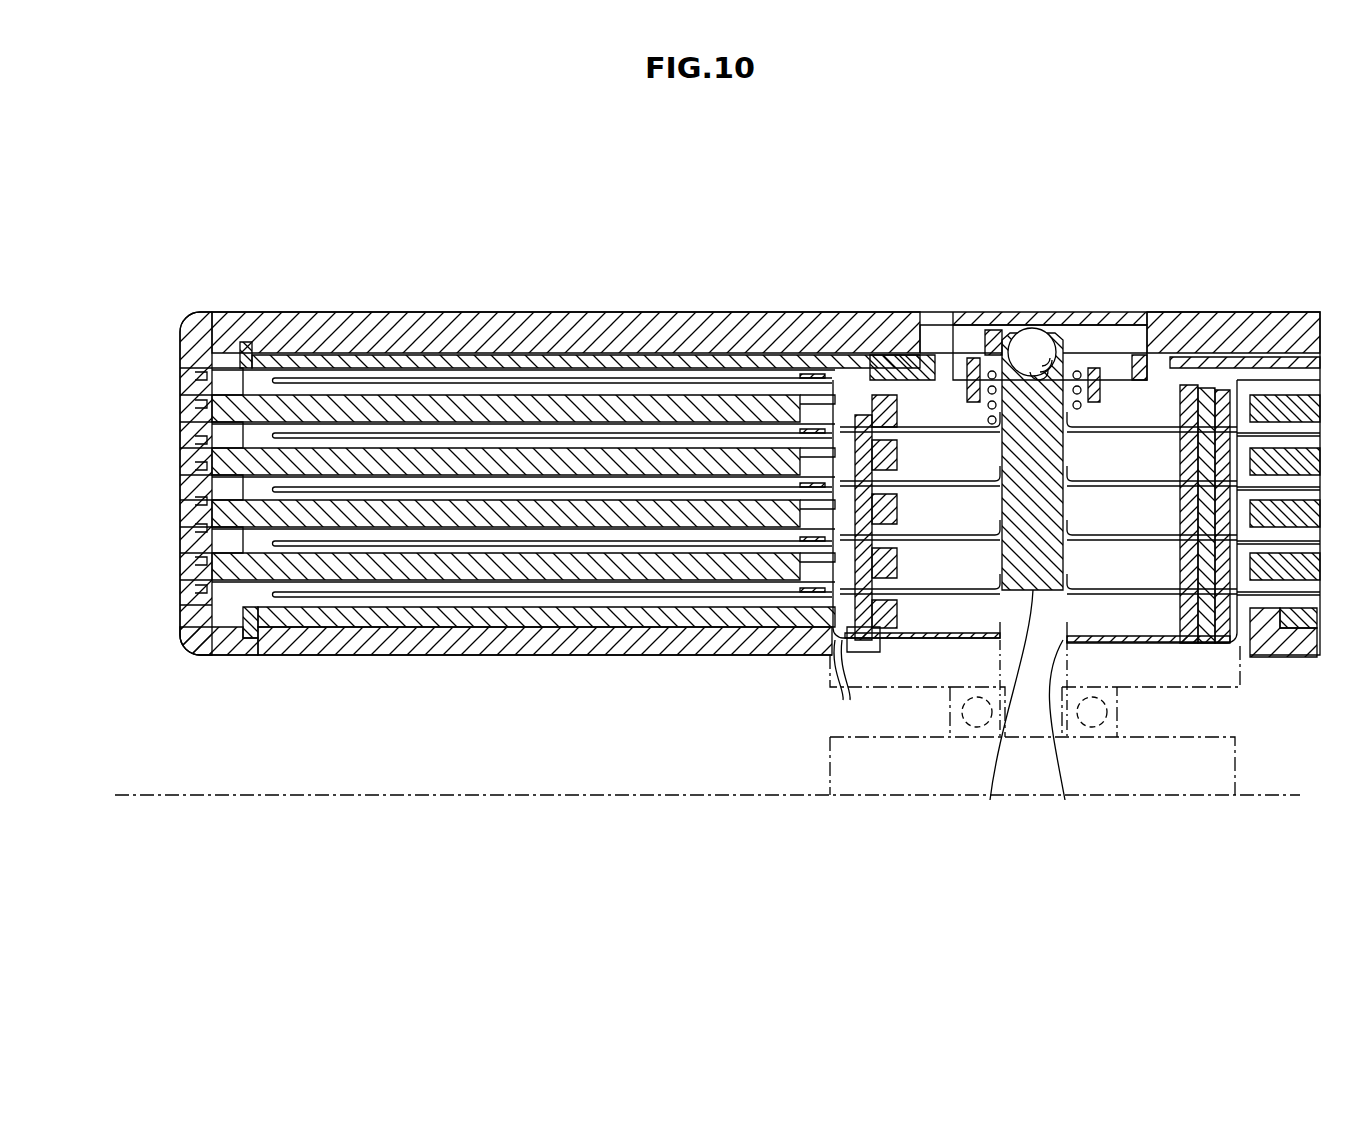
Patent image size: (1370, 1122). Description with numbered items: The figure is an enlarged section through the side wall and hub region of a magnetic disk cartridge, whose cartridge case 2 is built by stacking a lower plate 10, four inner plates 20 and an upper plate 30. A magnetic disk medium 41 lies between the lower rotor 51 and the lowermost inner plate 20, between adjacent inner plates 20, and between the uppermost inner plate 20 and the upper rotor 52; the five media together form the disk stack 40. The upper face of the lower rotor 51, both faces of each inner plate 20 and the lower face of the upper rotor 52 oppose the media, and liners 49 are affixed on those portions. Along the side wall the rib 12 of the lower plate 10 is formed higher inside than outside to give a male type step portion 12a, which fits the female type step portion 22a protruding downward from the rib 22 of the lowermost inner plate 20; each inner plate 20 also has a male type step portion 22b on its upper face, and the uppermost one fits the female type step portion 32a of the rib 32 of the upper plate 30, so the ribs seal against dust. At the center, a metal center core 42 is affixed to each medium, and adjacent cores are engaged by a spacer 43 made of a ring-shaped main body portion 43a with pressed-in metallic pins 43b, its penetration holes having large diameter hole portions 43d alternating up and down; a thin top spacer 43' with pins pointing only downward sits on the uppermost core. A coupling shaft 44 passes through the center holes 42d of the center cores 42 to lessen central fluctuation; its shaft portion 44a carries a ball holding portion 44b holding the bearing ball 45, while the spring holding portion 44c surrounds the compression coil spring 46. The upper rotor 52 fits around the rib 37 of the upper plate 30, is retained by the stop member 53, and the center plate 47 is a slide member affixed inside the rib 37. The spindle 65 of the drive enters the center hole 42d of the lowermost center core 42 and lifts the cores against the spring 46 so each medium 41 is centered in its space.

The cartridge case 2 is at (889, 189).
The lower plate 10 is at (782, 655).
The rib 12 is at (545, 641).
The male type step portion 12a is at (190, 608).
The inner plate 20 is at (508, 460).
The rib 22 is at (126, 366).
The female type step portion 22a is at (197, 585).
The male type step portion 22b is at (197, 557).
The upper plate 30 is at (735, 301).
The rib 32 is at (566, 332).
The female type step portion 32a is at (190, 350).
The rib 37 is at (880, 352).
The disk stack 40 is at (525, 537).
The magnetic disk medium 41 is at (295, 489).
The center core 42 is at (1185, 385).
The center hole 42d is at (1068, 605).
The spacer 43 is at (916, 509).
The top spacer 43' is at (909, 411).
The main body portion 43a is at (890, 610).
The pin 43b is at (868, 612).
The large diameter hole portion 43d is at (856, 415).
The coupling shaft 44 is at (1063, 335).
The shaft portion 44a is at (1016, 714).
The ball holding portion 44b is at (992, 330).
The spring holding portion 44c is at (970, 358).
The bearing ball 45 is at (1038, 330).
The compression coil spring 46 is at (1092, 368).
The center plate 47 is at (1138, 355).
The liner 49 is at (344, 705).
The lower rotor 51 is at (623, 614).
The upper rotor 52 is at (596, 358).
The stop member 53 is at (1260, 357).
The spindle 65 is at (1247, 719).